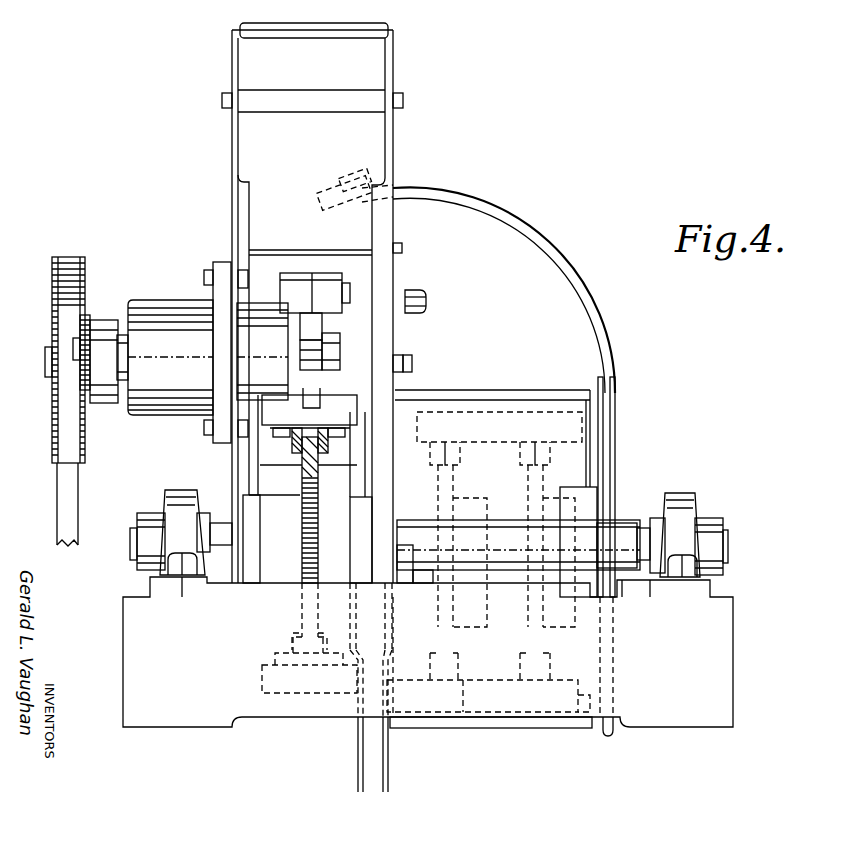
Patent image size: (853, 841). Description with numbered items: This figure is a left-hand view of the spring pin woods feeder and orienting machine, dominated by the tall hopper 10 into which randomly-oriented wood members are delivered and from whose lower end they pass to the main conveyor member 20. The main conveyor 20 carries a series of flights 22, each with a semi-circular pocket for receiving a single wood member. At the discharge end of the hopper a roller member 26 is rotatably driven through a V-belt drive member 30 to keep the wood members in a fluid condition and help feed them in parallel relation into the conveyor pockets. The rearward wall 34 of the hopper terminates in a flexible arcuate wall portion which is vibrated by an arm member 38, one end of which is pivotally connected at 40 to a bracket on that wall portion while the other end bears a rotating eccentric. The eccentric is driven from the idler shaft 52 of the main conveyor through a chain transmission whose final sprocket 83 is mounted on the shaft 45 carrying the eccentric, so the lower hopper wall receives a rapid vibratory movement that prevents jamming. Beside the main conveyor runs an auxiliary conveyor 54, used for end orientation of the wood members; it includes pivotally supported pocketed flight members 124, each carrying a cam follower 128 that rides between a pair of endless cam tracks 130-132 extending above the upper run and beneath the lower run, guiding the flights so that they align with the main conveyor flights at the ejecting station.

The hopper 10 is at (215, 64).
The main conveyor member 20 is at (243, 674).
The flight 22 is at (327, 408).
The roller member 26 is at (125, 340).
The V-belt drive member 30 is at (65, 491).
The rearward wall 34 is at (320, 150).
The arm member 38 is at (304, 290).
The pivotal connection 40 is at (346, 288).
The shaft 45 is at (340, 352).
The shaft 52 is at (130, 541).
The auxiliary conveyor 54 is at (520, 660).
The sprocket 83 is at (88, 315).
The pocketed flight member 124 is at (620, 450).
The cam follower 128 is at (616, 416).
The cam tracks 130-132 is at (614, 352).